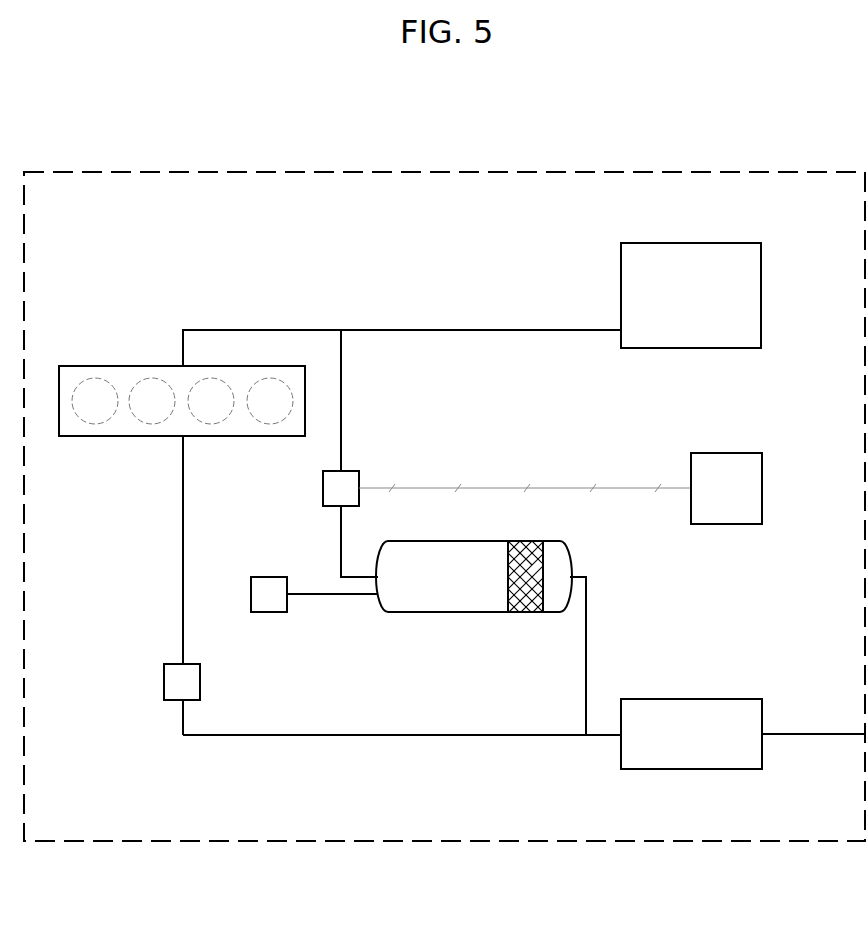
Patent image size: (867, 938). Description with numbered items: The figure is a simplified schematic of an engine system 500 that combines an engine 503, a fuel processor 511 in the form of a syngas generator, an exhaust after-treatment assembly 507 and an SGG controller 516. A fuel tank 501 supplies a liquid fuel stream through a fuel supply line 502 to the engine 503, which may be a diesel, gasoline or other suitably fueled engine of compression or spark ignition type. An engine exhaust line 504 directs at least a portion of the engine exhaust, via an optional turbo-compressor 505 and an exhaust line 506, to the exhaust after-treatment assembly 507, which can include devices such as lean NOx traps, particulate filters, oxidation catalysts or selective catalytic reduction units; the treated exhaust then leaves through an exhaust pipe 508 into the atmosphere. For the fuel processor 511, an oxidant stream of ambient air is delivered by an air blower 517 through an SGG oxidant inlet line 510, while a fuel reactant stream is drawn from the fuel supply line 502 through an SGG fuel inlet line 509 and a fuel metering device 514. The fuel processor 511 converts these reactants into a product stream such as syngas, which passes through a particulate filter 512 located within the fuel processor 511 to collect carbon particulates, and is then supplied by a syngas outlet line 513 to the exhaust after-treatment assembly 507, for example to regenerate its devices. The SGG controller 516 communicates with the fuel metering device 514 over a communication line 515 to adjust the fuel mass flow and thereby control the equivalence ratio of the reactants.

The engine system 500 is at (780, 172).
The fuel tank 501 is at (718, 243).
The fuel supply line 502 is at (245, 330).
The engine 503 is at (110, 364).
The engine exhaust line 504 is at (183, 490).
The turbo-compressor 505 is at (164, 680).
The exhaust line 506 is at (375, 735).
The exhaust after-treatment assembly 507 is at (650, 769).
The exhaust pipe 508 is at (848, 735).
The SGG fuel inlet line 509 is at (341, 418).
The SGG oxidant inlet line 510 is at (362, 596).
The fuel processor 511 is at (480, 612).
The particulate filter 512 is at (520, 541).
The syngas outlet line 513 is at (587, 668).
The fuel metering device 514 is at (359, 480).
The communication line 515 is at (510, 488).
The SGG controller 516 is at (738, 453).
The air blower 517 is at (278, 612).